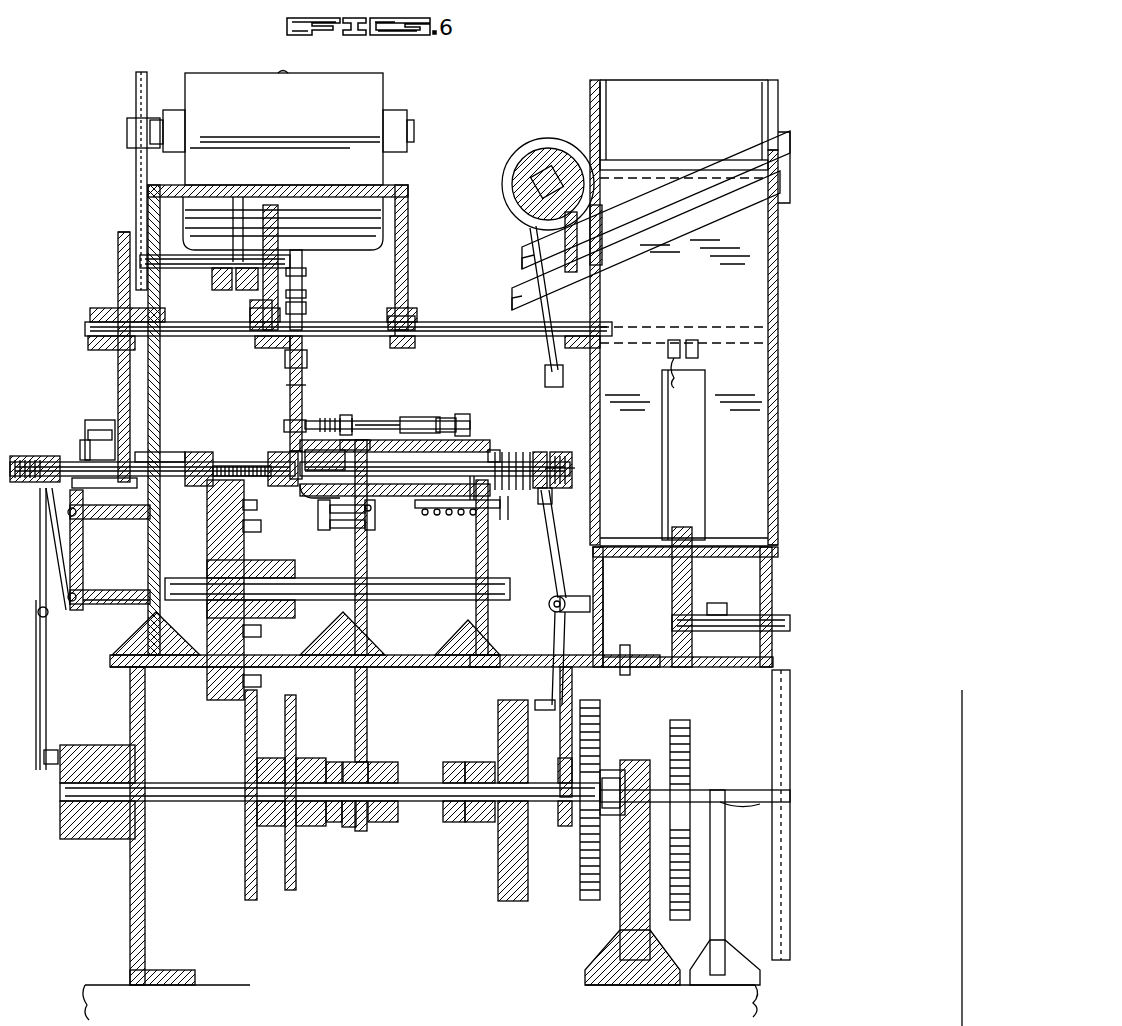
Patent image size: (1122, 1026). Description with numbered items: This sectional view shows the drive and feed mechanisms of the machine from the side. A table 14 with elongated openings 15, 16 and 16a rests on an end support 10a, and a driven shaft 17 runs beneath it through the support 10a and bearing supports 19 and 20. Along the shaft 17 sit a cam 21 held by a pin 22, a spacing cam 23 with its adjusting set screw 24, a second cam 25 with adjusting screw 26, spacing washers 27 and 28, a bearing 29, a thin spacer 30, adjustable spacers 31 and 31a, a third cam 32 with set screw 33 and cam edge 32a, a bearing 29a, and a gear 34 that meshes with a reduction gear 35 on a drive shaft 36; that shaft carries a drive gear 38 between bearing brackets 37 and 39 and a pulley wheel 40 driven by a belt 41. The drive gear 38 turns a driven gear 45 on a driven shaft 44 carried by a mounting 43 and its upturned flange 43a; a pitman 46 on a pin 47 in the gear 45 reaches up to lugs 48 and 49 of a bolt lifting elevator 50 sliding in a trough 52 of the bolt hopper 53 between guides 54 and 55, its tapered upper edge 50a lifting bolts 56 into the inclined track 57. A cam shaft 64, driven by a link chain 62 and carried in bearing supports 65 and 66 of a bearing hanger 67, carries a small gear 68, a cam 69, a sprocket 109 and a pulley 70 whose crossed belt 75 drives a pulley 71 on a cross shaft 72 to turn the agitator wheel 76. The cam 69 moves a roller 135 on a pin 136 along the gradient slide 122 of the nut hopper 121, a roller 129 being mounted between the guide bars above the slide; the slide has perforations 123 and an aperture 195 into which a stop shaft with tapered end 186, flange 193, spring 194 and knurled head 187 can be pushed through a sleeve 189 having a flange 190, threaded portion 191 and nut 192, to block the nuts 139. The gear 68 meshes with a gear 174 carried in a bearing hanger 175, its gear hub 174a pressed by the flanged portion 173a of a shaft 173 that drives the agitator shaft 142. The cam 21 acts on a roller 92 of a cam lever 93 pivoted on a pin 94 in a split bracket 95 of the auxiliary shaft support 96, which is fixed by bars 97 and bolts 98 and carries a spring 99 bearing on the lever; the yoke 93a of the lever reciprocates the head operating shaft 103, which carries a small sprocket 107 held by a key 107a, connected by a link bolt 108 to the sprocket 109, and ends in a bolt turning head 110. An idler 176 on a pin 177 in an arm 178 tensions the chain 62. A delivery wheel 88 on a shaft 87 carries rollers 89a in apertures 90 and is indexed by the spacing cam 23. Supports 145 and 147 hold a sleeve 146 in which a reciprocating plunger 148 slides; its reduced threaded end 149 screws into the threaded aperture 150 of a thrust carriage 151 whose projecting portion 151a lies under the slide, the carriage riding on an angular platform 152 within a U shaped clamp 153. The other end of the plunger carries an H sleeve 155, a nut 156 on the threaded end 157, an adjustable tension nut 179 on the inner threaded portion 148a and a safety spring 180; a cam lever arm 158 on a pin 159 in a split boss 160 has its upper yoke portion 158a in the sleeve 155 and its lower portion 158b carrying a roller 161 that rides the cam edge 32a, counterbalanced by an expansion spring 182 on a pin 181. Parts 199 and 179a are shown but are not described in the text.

The nut hopper 121 is at (385, 91).
The agitator shaft 142 is at (130, 129).
The bearing hanger 67 is at (396, 188).
The bearing support 66 is at (408, 262).
The bearing support 65 is at (160, 208).
The bearing hanger 175 is at (240, 200).
The gear 174 is at (279, 215).
The shaft 173 is at (172, 268).
The flanged center portion 173a is at (215, 286).
The gear hub 174a is at (248, 286).
The small gear 68 is at (258, 318).
The roller 129 is at (302, 268).
The roller 135 is at (303, 292).
The pin 136 is at (306, 308).
The larger sprocket 109 is at (118, 250).
The link bolt 108 is at (118, 286).
The cam shaft 64 is at (452, 334).
The link chain 62 is at (92, 350).
The cam 69 is at (302, 372).
The gradient slide 122 is at (290, 368).
The perforations 123 is at (290, 388).
The aperture 195 is at (284, 424).
The tapered end 186 is at (305, 428).
The flange 190 is at (405, 420).
The nut 192 is at (350, 418).
The threaded portion 191 is at (355, 420).
The flange 193 is at (332, 418).
The spring 194 is at (360, 422).
The sleeve 189 is at (410, 418).
The collar 199 is at (448, 418).
The knurled head 187 is at (470, 416).
The head operating shaft 103 is at (168, 462).
The yoke 93a is at (52, 482).
The idler 176 is at (85, 428).
The pin 177 is at (88, 428).
The arm 178 is at (80, 445).
The key 107a is at (150, 452).
The bolt turning head 110 is at (198, 452).
The bolts 56 is at (230, 465).
The nuts 139 is at (282, 455).
The threaded aperture 150 is at (312, 462).
The small sprocket 107 is at (118, 494).
The auxiliary shaft support 96 is at (84, 556).
The bolts 98 is at (150, 512).
The bars 97 is at (116, 592).
The spring 99 is at (58, 540).
The cam lever 93 is at (46, 672).
The pin 94 is at (40, 600).
The split bracket 95 is at (50, 618).
The roller 92 is at (48, 764).
The delivery wheel 88 is at (272, 562).
The apertures 90 is at (207, 548).
The rollers 89a is at (252, 512).
The shaft 87 is at (318, 586).
The table 14 is at (165, 668).
The elongated opening 15 is at (258, 658).
The elongated opening 16 is at (530, 668).
The elongated opening 16a is at (640, 670).
The end support 10a is at (147, 884).
The support 145 is at (368, 545).
The sleeve 146 is at (425, 490).
The reciprocating plunger 148 is at (465, 478).
The support 147 is at (476, 540).
The reduced threaded end 149 is at (340, 528).
The thrust carriage 151 is at (316, 505).
The projecting portion 151a is at (300, 498).
The angular platform 152 is at (365, 508).
The U shaped clamp 153 is at (360, 518).
The adjustable tension nut 179 is at (470, 510).
The arm 179a is at (490, 450).
The inner threaded portion 148a is at (500, 452).
The safety spring 180 is at (518, 456).
The H sleeve 155 is at (542, 456).
The nut 156 is at (575, 450).
The threaded end 157 is at (575, 470).
The pin 181 is at (490, 512).
The expansion spring 182 is at (520, 512).
The cam lever arm 158 is at (552, 535).
The upper yoke portion 158a is at (552, 508).
The pin 159 is at (549, 608).
The split boss 160 is at (575, 596).
The lower portion 158b is at (556, 712).
The roller 161 is at (540, 710).
The bolt lifting elevator 50 is at (773, 460).
The trough 52 is at (773, 502).
The bolt hopper 53 is at (590, 111).
The guide 54 is at (602, 114).
The guide 55 is at (768, 106).
The inclined track 57 is at (784, 126).
The tapered upper edge 50a is at (640, 165).
The pitman 46 is at (668, 490).
The lug 48 is at (674, 340).
The lug 49 is at (692, 340).
The mounting 43 is at (772, 573).
The driven gear 45 is at (675, 586).
The pin 47 is at (692, 562).
The upturned flange 43a is at (714, 604).
The driven shaft 44 is at (782, 614).
The agitator wheel 76 is at (508, 158).
The pulley 71 is at (512, 188).
The cross shaft 72 is at (535, 190).
The crossed belt 75 is at (530, 236).
The pulley 70 is at (545, 372).
The driven shaft 17 is at (208, 800).
The cam 21 is at (68, 838).
The pin 22 is at (118, 758).
The spacing cam 23 is at (245, 742).
The adjusting set screw 24 is at (278, 750).
The second cam 25 is at (296, 718).
The adjusting screw 26 is at (305, 758).
The spacing washer 27 is at (336, 762).
The spacing washer 28 is at (338, 824).
The bearing 29 is at (352, 826).
The bearing support 19 is at (367, 712).
The thin spacer 30 is at (370, 762).
The adjustable spacer 31 is at (396, 762).
The adjustable spacer 31a is at (445, 762).
The adjustable set screw 33 is at (484, 762).
The third cam 32 is at (498, 718).
The cam edge 32a is at (530, 870).
The bearing 29a is at (560, 758).
The bearing support 20 is at (572, 694).
The gear 34 is at (600, 718).
The reduction gear 35 is at (590, 822).
The drive shaft 36 is at (612, 840).
The bearing support 37 is at (620, 935).
The drive gear 38 is at (690, 748).
The bearing bracket 39 is at (722, 790).
The pulley wheel 40 is at (760, 830).
The belt 41 is at (772, 698).